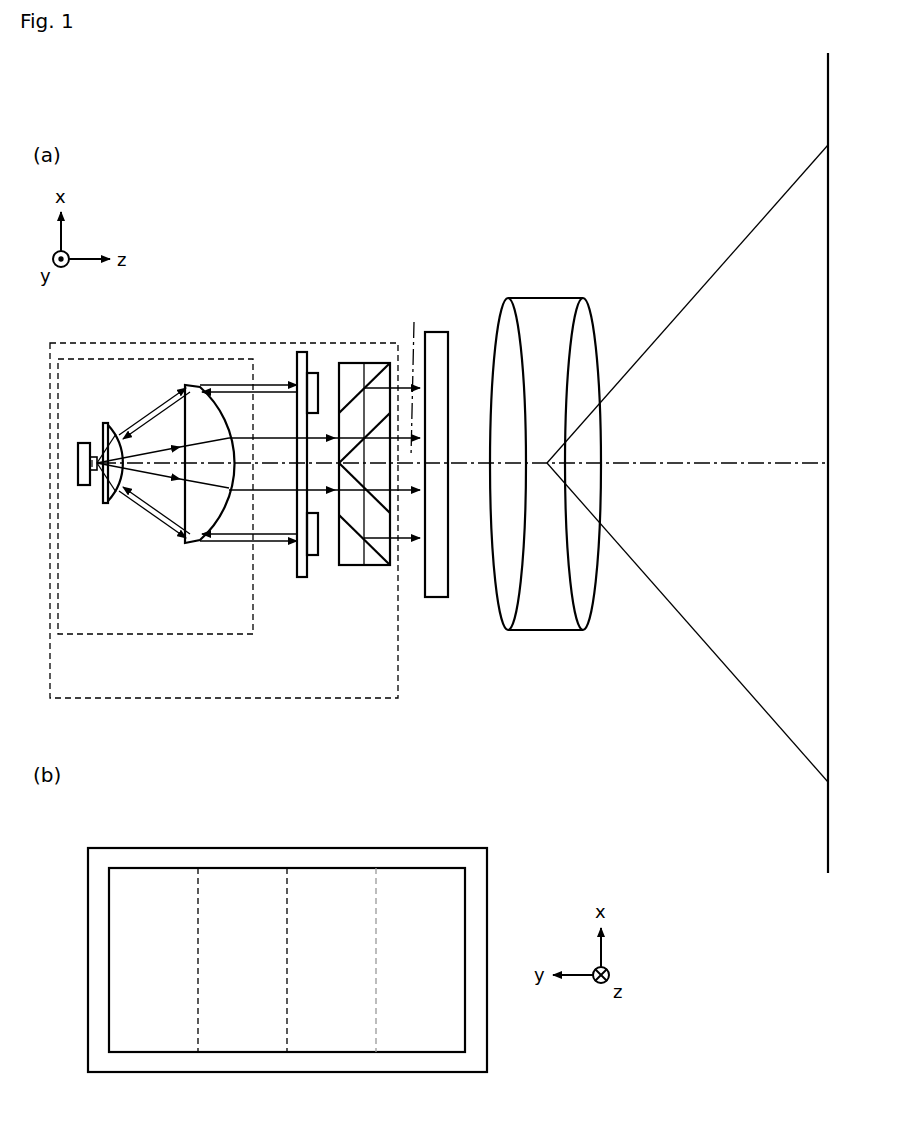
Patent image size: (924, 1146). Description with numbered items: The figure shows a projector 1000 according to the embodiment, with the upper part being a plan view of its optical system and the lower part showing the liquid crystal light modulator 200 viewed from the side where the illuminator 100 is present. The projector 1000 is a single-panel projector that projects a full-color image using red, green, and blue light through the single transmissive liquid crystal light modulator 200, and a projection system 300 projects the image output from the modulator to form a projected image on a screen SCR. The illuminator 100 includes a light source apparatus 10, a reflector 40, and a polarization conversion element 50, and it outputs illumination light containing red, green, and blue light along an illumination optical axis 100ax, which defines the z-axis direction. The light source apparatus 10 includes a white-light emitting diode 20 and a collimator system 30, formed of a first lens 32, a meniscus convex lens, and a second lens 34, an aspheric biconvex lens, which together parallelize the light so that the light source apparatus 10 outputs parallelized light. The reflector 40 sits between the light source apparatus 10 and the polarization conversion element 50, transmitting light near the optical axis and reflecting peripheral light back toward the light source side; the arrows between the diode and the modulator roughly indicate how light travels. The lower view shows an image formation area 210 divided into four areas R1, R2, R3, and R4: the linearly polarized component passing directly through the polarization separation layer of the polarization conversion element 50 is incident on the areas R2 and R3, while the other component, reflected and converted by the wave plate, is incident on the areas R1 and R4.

The projector 1000 is at (308, 255).
The illuminator 100 is at (268, 343).
The illumination optical axis 100ax is at (429, 378).
The light source apparatus 10 is at (185, 635).
The white-light emitting diode 20 is at (90, 434).
The collimator system 30 is at (198, 594).
The first lens 32 is at (106, 504).
The second lens 34 is at (186, 546).
The reflector 40 is at (304, 584).
The polarization conversion element 50 is at (361, 567).
The liquid crystal light modulator 200 is at (438, 598).
The image formation area 210 is at (160, 868).
The projection system 300 is at (538, 297).
The screen SCR is at (828, 103).
The area R1 is at (312, 676).
The area R2 is at (338, 740).
The area R3 is at (383, 766).
The area R4 is at (427, 790).